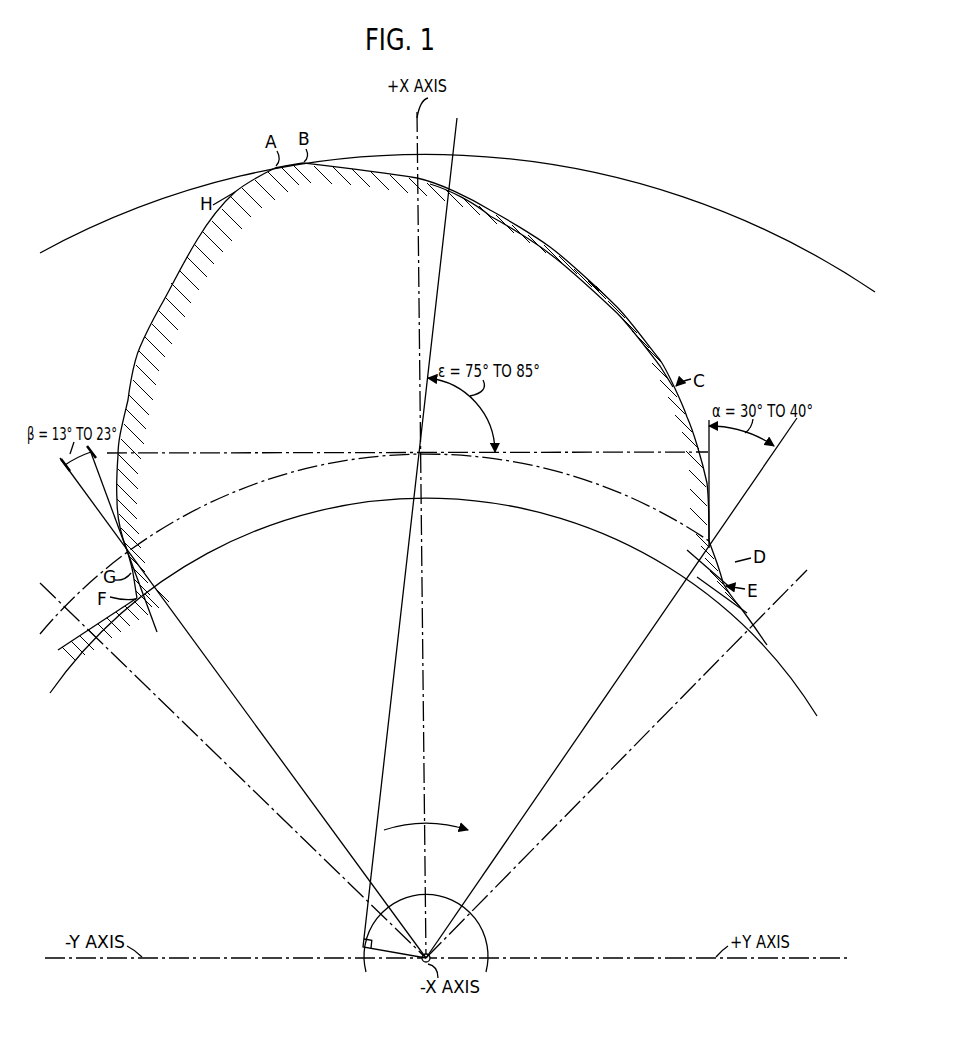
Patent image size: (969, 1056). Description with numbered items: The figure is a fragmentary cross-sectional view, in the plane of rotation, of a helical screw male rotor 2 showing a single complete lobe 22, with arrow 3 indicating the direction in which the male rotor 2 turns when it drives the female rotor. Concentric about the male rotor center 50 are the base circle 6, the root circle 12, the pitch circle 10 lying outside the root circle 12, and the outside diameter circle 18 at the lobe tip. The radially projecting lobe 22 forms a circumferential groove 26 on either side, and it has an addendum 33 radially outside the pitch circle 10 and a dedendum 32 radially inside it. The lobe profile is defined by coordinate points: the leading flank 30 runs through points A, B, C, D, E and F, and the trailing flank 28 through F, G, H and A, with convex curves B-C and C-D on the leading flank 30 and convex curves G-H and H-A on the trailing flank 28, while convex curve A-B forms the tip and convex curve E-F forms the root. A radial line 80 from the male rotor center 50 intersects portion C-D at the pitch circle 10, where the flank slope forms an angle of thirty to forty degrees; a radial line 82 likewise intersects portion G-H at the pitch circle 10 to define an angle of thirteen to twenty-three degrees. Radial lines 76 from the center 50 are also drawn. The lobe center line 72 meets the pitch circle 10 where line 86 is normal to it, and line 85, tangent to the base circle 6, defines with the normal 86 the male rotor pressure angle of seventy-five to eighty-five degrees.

The helical screw male rotor 2 is at (445, 392).
The arrow 3 is at (447, 827).
The base circle 6 is at (487, 926).
The pitch circle 10 is at (263, 481).
The root circle 12 is at (603, 536).
The outside diameter circle 18 is at (555, 162).
The male rotor lobe 22 is at (665, 376).
The circumferential groove 26 is at (91, 390).
The trailing flank 28 is at (160, 297).
The leading flank 30 is at (632, 322).
The dedendum 32 is at (713, 544).
The addendum 33 is at (660, 352).
The male rotor center 50 is at (419, 962).
The male rotor lobe center line 72 is at (418, 289).
The radial line 76 is at (195, 722).
The radial line 80 is at (603, 707).
The radial line 82 is at (262, 719).
The line tangent to base circle 85 is at (391, 705).
The line normal to the pitch circle 86 is at (214, 452).